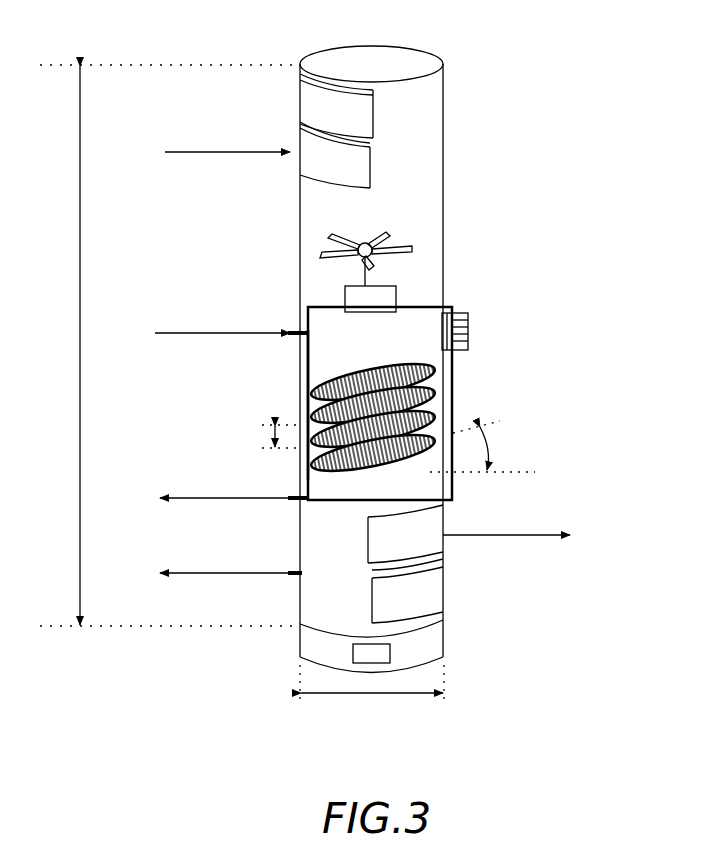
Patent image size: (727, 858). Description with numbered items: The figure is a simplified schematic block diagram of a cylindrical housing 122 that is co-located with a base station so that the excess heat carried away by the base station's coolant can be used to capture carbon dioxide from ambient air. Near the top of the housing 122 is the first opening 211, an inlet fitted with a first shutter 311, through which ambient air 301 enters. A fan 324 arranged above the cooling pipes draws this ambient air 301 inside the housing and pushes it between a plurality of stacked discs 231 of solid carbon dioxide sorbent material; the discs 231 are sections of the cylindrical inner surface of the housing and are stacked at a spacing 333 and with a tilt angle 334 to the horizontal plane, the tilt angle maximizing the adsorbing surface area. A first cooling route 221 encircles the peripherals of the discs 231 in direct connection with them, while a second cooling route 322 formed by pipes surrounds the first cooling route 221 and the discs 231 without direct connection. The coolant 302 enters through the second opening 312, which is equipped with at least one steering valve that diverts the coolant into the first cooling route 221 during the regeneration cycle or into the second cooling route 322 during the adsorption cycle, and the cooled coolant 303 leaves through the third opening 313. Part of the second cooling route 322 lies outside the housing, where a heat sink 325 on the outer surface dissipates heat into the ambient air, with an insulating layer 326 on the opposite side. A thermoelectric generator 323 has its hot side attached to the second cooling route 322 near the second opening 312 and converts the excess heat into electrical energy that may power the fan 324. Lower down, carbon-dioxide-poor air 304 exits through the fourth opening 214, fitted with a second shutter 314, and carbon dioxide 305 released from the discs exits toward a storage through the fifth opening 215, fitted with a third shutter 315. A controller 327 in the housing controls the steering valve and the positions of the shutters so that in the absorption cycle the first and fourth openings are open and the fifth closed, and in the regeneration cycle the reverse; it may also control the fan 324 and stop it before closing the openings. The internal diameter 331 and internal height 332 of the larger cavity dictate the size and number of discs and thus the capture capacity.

The housing 122 is at (403, 46).
The first shutter 311 is at (367, 124).
The first opening 211 is at (363, 170).
The ambient air 301 is at (236, 151).
The coolant 302 is at (200, 334).
The cooled coolant 303 is at (216, 498).
The carbon-dioxide-poor air 304 is at (533, 534).
The carbon dioxide 305 is at (210, 572).
The second opening 312 is at (290, 330).
The third opening 313 is at (292, 502).
The third shutter 315 is at (298, 587).
The fifth opening 215 is at (294, 574).
The second cooling route 322 is at (455, 400).
The first cooling route 221 is at (306, 372).
The thermoelectric generator 323 is at (400, 287).
The fan 324 is at (405, 250).
The insulating layer 326 is at (458, 310).
The heat sink 325 is at (468, 336).
The discs 231 is at (360, 385).
The fourth opening 214 is at (438, 517).
The second shutter 314 is at (436, 604).
The controller 327 is at (375, 655).
The internal height 332 is at (80, 270).
The internal diameter 331 is at (380, 694).
The spacing 333 is at (273, 432).
The tilt angle 334 is at (495, 440).